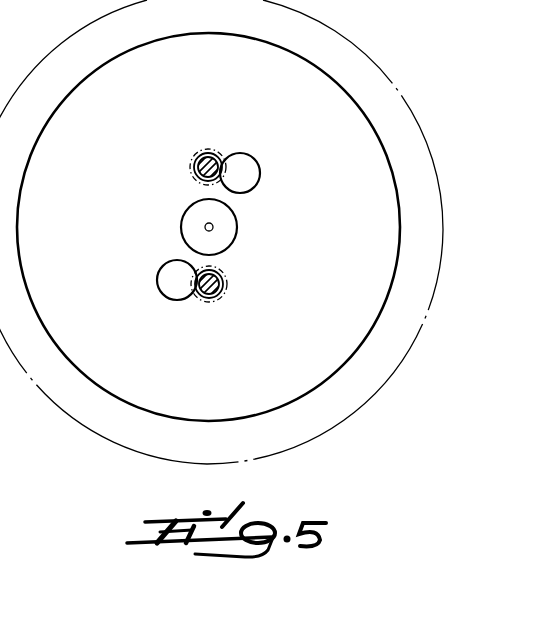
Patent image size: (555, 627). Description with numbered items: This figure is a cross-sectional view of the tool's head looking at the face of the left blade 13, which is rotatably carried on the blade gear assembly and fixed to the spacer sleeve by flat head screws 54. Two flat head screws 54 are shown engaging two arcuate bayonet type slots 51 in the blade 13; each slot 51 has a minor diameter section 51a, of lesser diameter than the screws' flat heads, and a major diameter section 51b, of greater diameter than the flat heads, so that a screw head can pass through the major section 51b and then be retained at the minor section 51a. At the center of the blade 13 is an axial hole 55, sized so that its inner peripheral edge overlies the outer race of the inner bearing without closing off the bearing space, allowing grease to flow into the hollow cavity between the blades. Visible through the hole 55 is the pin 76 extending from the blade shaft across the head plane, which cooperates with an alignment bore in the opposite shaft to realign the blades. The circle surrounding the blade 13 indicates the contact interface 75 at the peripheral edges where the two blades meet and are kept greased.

The left blade 13 is at (352, 32).
The contact interface 75 is at (366, 88).
The axial hole 55 is at (231, 241).
The pin 76 is at (213, 226).
The arcuate bayonet type slots 51 is at (219, 150).
The minor diameter section 51a is at (194, 150).
The major diameter section 51b is at (262, 176).
The flat head screws 54 is at (221, 150).